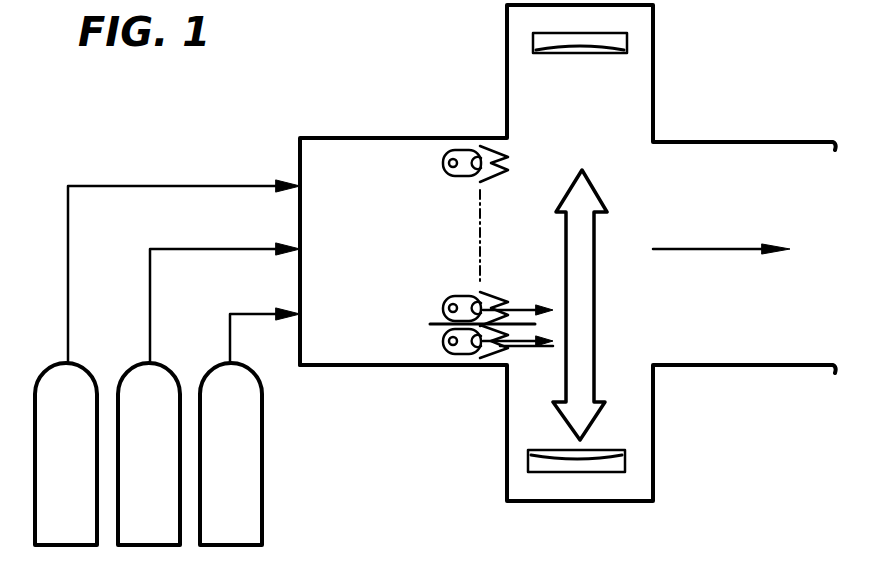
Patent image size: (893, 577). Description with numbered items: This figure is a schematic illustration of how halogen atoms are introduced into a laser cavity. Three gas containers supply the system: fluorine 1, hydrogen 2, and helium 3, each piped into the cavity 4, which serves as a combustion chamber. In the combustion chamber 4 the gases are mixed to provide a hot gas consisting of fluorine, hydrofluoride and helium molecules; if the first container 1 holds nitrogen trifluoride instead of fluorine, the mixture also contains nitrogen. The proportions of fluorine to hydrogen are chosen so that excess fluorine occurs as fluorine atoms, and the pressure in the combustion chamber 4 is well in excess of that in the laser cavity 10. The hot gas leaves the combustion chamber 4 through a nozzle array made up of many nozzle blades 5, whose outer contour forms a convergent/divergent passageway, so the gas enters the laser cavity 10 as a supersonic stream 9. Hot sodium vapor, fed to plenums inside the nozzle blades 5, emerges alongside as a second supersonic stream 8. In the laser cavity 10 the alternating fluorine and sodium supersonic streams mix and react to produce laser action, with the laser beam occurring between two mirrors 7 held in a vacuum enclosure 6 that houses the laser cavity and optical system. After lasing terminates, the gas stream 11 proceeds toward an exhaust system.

The fluorine container 1 is at (39, 370).
The hydrogen container 2 is at (140, 368).
The helium container 3 is at (223, 368).
The combustion chamber 4 is at (361, 264).
The nozzle blades 5 is at (443, 306).
The vacuum enclosure 6 is at (506, 60).
The mirrors 7 is at (627, 43).
The sodium vapor supersonic stream 8 is at (536, 308).
The fluorine supersonic stream 9 is at (545, 346).
The laser cavity 10 is at (595, 348).
The exhaust gas stream 11 is at (692, 253).